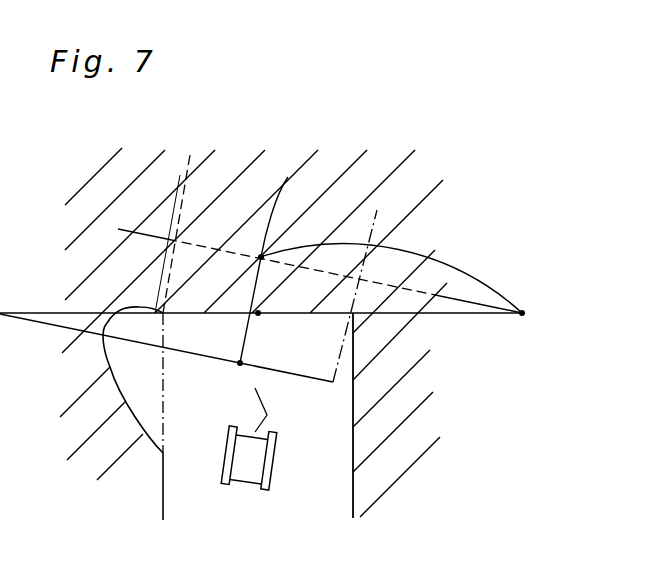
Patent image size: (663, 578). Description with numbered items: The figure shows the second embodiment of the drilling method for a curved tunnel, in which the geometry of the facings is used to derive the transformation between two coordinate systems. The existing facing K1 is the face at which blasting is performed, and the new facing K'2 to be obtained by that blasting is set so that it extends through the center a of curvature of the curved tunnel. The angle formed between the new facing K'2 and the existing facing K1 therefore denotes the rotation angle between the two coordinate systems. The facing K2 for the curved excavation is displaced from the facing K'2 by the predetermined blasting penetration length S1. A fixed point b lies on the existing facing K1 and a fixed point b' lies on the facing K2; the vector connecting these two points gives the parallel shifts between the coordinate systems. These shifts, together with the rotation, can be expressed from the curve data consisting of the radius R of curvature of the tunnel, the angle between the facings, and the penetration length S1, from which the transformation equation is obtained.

The center of curvature a is at (533, 312).
The fixed point on the existing facing b is at (264, 303).
The fixed point on the facing K2 b' is at (228, 375).
The existing facing K1 is at (310, 317).
The facing for the curved excavation K2 is at (285, 372).
The new facing K'2 is at (320, 251).
The radius of curvature R is at (391, 275).
The blasting penetration length S1 is at (121, 339).